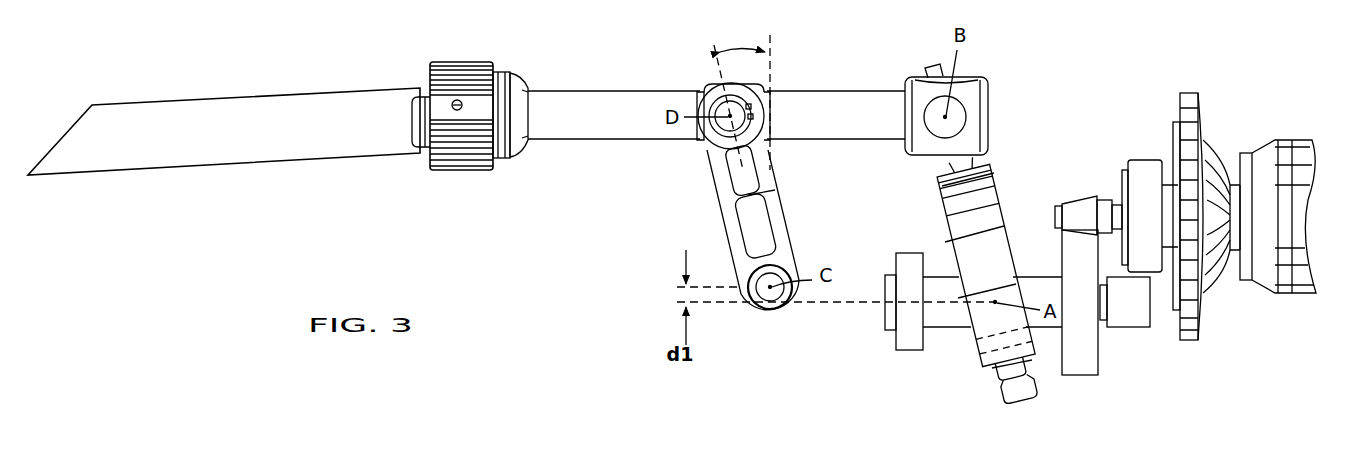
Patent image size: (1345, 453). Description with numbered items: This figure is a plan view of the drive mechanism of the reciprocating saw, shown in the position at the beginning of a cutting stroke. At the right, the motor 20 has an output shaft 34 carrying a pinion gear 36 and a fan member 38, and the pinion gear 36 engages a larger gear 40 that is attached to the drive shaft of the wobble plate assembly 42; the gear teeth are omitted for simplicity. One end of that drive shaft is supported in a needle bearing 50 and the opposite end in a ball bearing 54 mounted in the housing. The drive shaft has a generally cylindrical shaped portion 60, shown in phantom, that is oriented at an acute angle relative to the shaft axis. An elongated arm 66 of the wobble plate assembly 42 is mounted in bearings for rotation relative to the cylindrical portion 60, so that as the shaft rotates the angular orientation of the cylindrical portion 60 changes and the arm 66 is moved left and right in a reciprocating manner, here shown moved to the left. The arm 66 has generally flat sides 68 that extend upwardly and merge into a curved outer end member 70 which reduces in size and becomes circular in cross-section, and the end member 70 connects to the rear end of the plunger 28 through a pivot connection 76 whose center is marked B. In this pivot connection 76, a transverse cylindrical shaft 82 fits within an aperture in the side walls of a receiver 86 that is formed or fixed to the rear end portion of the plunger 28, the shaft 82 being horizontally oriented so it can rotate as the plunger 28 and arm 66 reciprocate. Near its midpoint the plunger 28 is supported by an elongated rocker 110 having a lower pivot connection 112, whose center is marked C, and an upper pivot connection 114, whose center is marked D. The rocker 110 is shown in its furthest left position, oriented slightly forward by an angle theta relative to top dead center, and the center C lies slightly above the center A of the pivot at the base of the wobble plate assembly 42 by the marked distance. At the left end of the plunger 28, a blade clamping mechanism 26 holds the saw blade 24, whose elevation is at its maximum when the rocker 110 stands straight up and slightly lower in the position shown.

The motor 20 is at (1283, 272).
The saw blade 24 is at (235, 125).
The blade clamping mechanism 26 is at (462, 150).
The plunger 28 is at (583, 88).
The output shaft 34 is at (1108, 205).
The pinion gear 36 is at (1082, 215).
The fan member 38 is at (1188, 110).
The gear 40 is at (1082, 360).
The wobble plate assembly 42 is at (941, 368).
The needle bearing 50 is at (1128, 312).
The ball bearing 54 is at (908, 338).
The cylindrical shaped portion 60 is at (995, 376).
The elongated arm 66 is at (998, 285).
The flat sides 68 is at (945, 240).
The curved outer end member 70 is at (952, 202).
The pivot connection 76 is at (912, 66).
The transverse cylindrical shaft 82 is at (950, 124).
The receiver 86 is at (970, 95).
The elongated rocker 110 is at (693, 229).
The lower pivot connection 112 is at (757, 312).
The upper pivot connection 114 is at (752, 82).